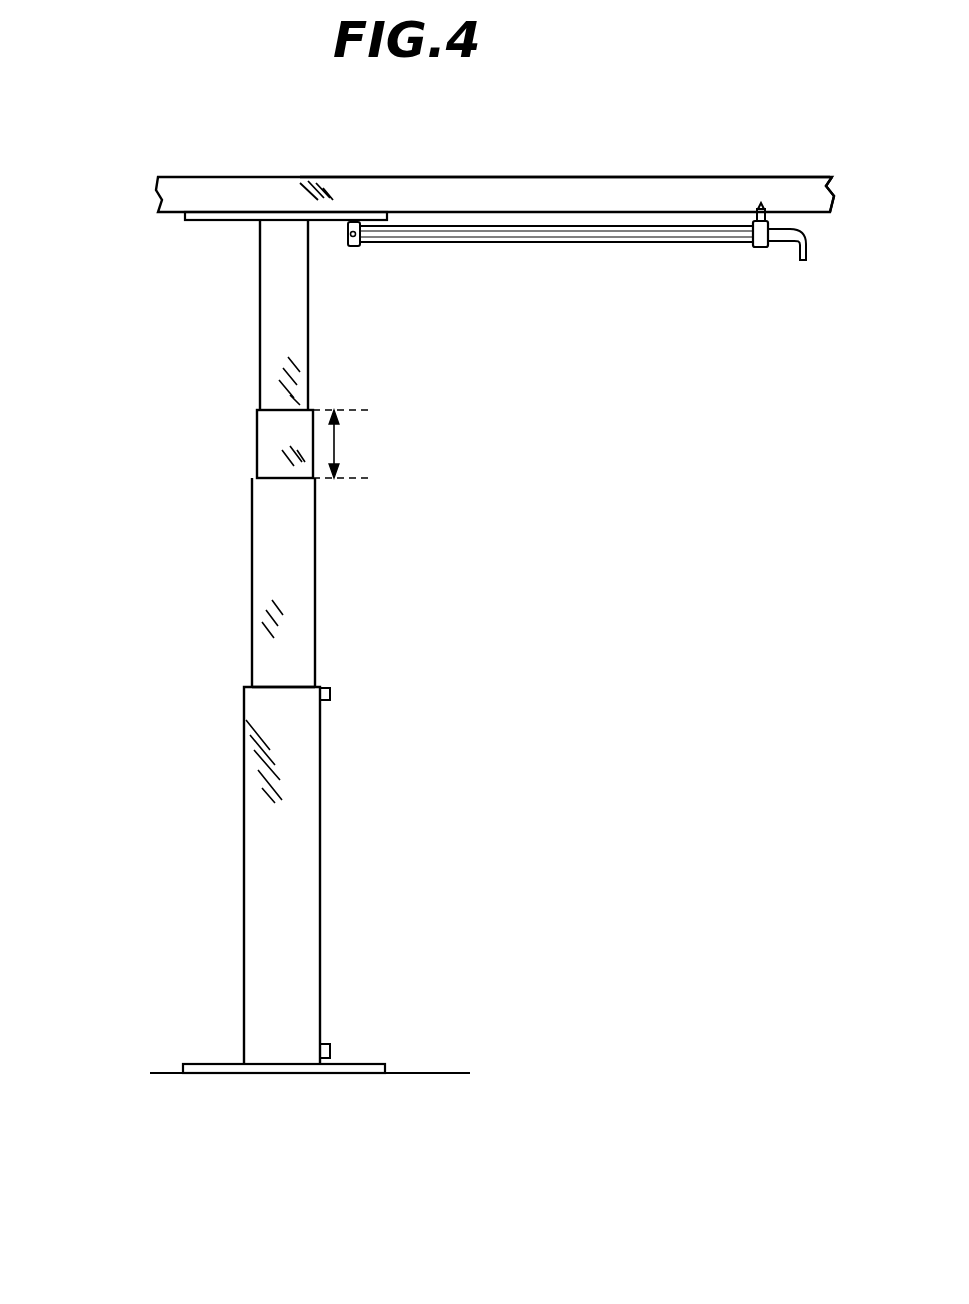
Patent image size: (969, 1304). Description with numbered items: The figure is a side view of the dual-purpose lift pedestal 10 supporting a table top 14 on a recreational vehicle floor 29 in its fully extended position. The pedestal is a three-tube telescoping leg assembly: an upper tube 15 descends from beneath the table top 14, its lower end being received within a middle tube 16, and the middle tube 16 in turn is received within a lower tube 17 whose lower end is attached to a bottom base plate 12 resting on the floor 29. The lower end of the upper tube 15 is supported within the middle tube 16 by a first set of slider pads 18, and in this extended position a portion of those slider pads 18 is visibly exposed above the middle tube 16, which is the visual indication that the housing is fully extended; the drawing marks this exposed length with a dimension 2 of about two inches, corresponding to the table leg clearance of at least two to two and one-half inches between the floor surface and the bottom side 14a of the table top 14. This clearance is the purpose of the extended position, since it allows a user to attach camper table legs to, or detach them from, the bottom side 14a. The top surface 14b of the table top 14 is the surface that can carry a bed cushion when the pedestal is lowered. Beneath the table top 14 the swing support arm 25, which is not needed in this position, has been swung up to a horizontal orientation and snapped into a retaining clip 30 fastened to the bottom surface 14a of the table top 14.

The dual-purpose lift pedestal 10 is at (140, 291).
The bottom base plate 12 is at (187, 222).
The table top 14 is at (157, 192).
The bottom side of table top 14a is at (822, 215).
The top surface of table top 14b is at (613, 178).
The upper tube 15 is at (258, 343).
The middle tube 16 is at (250, 625).
The lower tube 17 is at (250, 878).
The first set of slider pads 18 is at (258, 452).
The swing support arm 25 is at (525, 244).
The recreational vehicle floor 29 is at (430, 1075).
The retaining clip 30 is at (752, 246).
The two inch travel dimension 2 is at (338, 437).